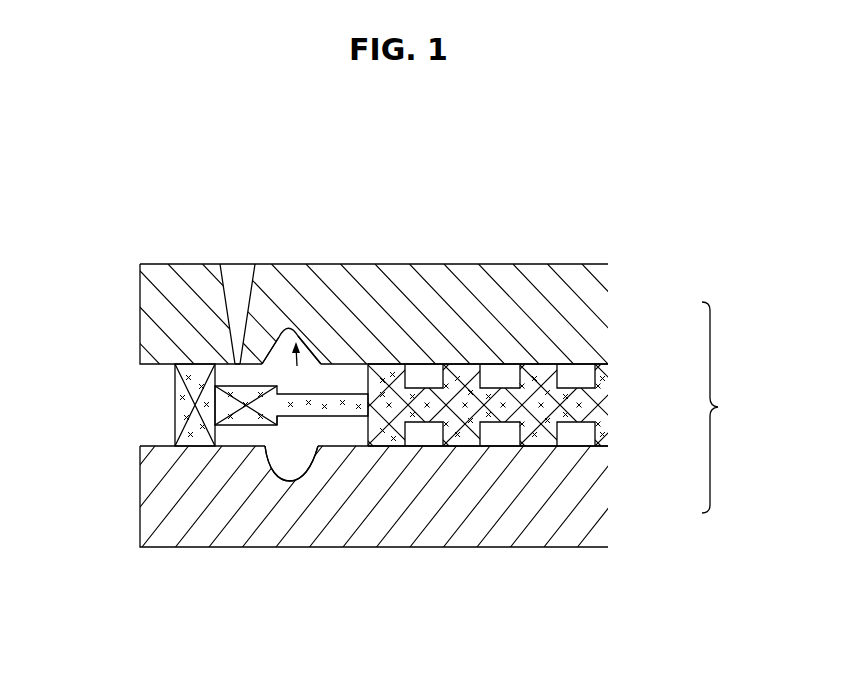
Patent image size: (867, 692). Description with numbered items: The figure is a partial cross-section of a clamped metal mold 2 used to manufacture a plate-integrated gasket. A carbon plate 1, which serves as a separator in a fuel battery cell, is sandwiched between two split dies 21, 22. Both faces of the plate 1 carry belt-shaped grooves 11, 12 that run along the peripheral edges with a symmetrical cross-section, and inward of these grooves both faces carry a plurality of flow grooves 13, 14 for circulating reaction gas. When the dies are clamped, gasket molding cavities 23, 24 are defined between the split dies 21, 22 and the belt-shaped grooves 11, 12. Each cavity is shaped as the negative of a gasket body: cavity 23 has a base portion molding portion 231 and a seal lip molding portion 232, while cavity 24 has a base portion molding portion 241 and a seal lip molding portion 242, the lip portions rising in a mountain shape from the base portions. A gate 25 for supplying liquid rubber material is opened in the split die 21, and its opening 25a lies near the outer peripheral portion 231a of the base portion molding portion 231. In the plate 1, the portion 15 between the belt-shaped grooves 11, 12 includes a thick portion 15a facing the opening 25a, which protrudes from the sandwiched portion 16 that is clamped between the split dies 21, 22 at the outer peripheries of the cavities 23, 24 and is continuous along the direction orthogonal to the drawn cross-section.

The plate 1 is at (386, 402).
The metal mold 2 is at (719, 407).
The belt-shaped groove 11 is at (484, 319).
The belt-shaped groove 12 is at (481, 517).
The flow grooves 13 is at (500, 299).
The flow grooves 14 is at (500, 516).
The portion between belt-shaped grooves 15 is at (216, 498).
The thick portion 15a is at (262, 450).
The sandwiched portion 16 is at (174, 423).
The split die 21 is at (387, 285).
The split die 22 is at (367, 522).
The gasket molding cavity 23 is at (210, 285).
The base portion molding portion 231 is at (333, 377).
The outer peripheral portion 231a is at (176, 377).
The seal lip molding portion 232 is at (274, 352).
The gasket molding cavity 24 is at (264, 522).
The base portion molding portion 241 is at (333, 433).
The seal lip molding portion 242 is at (276, 464).
The gate 25 is at (192, 284).
The opening 25a is at (230, 376).